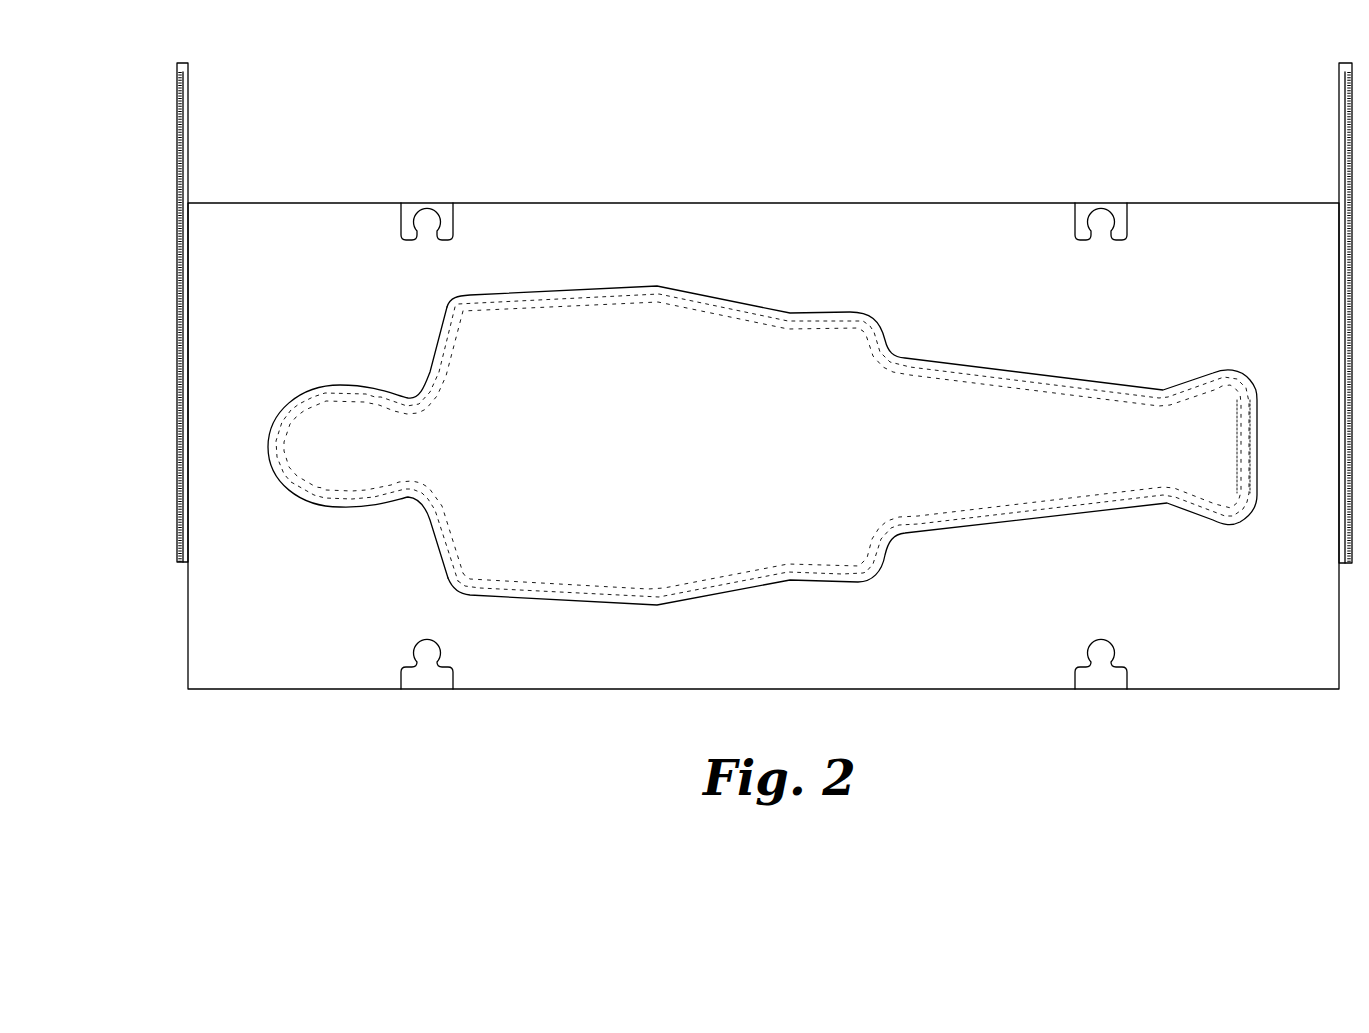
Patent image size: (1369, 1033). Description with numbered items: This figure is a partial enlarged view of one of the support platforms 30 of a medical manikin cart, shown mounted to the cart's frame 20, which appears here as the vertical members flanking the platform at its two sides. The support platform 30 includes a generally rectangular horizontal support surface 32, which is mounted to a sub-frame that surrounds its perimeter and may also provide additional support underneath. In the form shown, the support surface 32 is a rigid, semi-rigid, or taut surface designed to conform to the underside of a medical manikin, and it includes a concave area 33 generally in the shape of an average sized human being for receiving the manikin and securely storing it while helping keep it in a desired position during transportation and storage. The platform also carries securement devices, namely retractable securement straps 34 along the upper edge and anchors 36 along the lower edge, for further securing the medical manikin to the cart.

The frame 20 is at (172, 335).
The support platform 30 is at (222, 728).
The horizontal support surface 32 is at (378, 350).
The concave area 33 is at (671, 450).
The retractable securement strap 34 is at (423, 208).
The anchor 36 is at (429, 673).